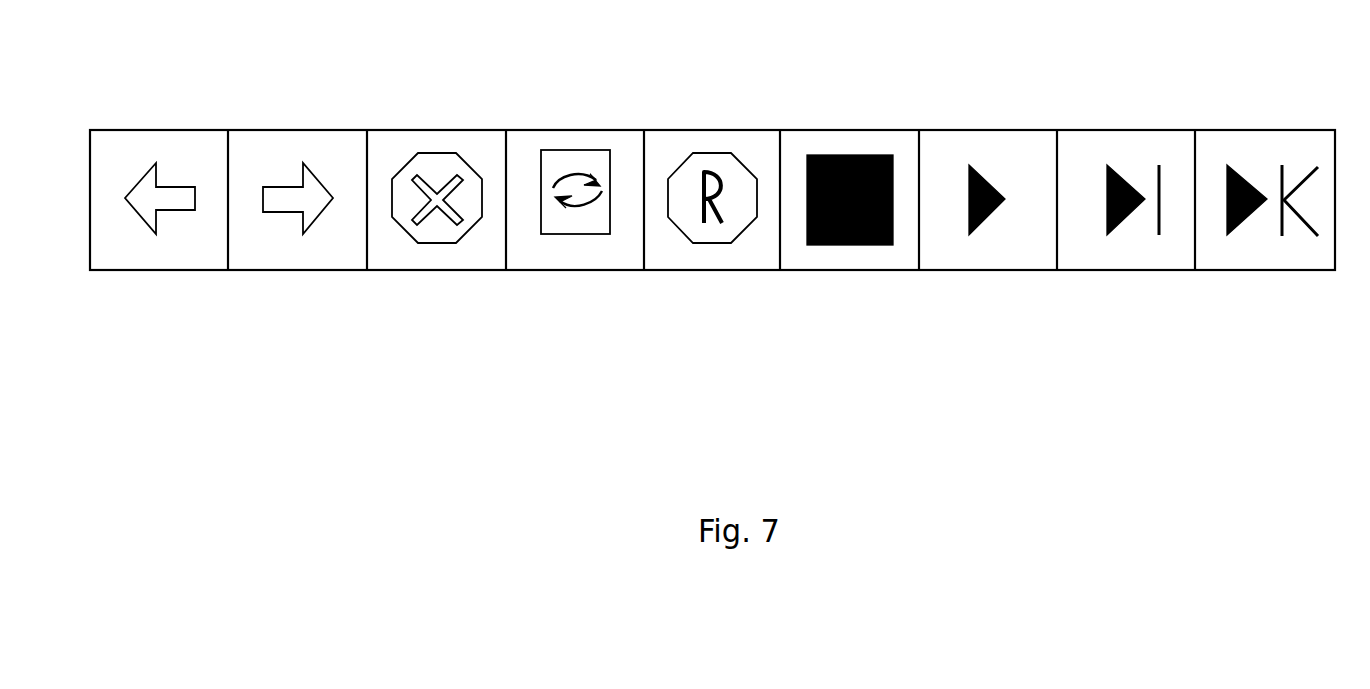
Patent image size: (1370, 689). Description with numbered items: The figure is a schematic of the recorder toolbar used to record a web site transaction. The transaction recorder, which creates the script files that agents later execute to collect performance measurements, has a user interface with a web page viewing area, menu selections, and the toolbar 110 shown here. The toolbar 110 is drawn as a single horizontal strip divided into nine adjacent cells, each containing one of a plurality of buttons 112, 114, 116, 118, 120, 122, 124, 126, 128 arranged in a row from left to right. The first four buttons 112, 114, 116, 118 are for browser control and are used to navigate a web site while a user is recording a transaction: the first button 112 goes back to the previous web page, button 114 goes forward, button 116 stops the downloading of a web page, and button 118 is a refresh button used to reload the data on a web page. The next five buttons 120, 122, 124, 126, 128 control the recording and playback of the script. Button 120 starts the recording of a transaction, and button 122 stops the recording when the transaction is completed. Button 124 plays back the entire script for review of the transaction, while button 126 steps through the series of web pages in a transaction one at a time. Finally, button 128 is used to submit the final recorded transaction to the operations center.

The toolbar 110 is at (1228, 96).
The first button 112 is at (203, 253).
The button 114 is at (340, 253).
The button 116 is at (482, 253).
The refresh button 118 is at (622, 253).
The button 120 is at (755, 253).
The button 122 is at (893, 253).
The button 124 is at (1028, 253).
The button 126 is at (1168, 253).
The button 128 is at (1310, 254).